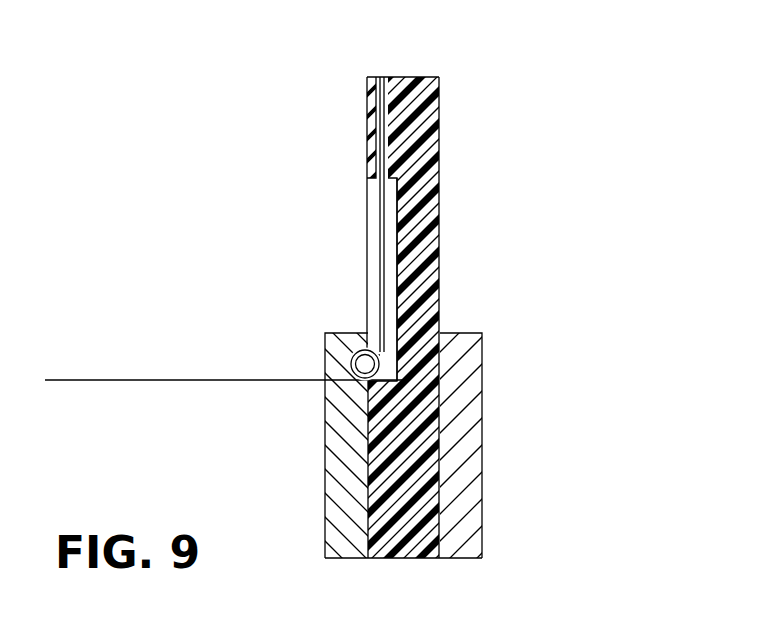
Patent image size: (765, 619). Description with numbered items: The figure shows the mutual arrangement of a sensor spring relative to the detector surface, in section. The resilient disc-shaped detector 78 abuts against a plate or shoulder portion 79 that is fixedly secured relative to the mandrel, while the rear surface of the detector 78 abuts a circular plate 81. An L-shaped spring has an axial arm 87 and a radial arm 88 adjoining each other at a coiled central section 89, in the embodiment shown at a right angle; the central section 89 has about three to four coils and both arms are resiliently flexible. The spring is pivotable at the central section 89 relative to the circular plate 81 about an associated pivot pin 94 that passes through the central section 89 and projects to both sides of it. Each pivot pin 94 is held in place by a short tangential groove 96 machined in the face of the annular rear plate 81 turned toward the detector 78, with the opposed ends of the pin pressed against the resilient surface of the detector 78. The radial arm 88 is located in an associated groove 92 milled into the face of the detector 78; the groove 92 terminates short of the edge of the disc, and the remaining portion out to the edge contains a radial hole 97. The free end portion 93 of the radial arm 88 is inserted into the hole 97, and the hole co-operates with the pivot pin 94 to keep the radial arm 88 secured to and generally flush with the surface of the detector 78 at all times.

The detector 78 is at (413, 479).
The shoulder portion 79 is at (457, 342).
The circular plate 81 is at (340, 462).
The axial arm 87 is at (161, 378).
The radial arm 88 is at (382, 243).
The coiled central section 89 is at (379, 369).
The groove 92 is at (373, 198).
The free end portion 93 is at (368, 123).
The pivot pin 94 is at (365, 364).
The tangential groove 96 is at (358, 380).
The radial hole 97 is at (389, 72).